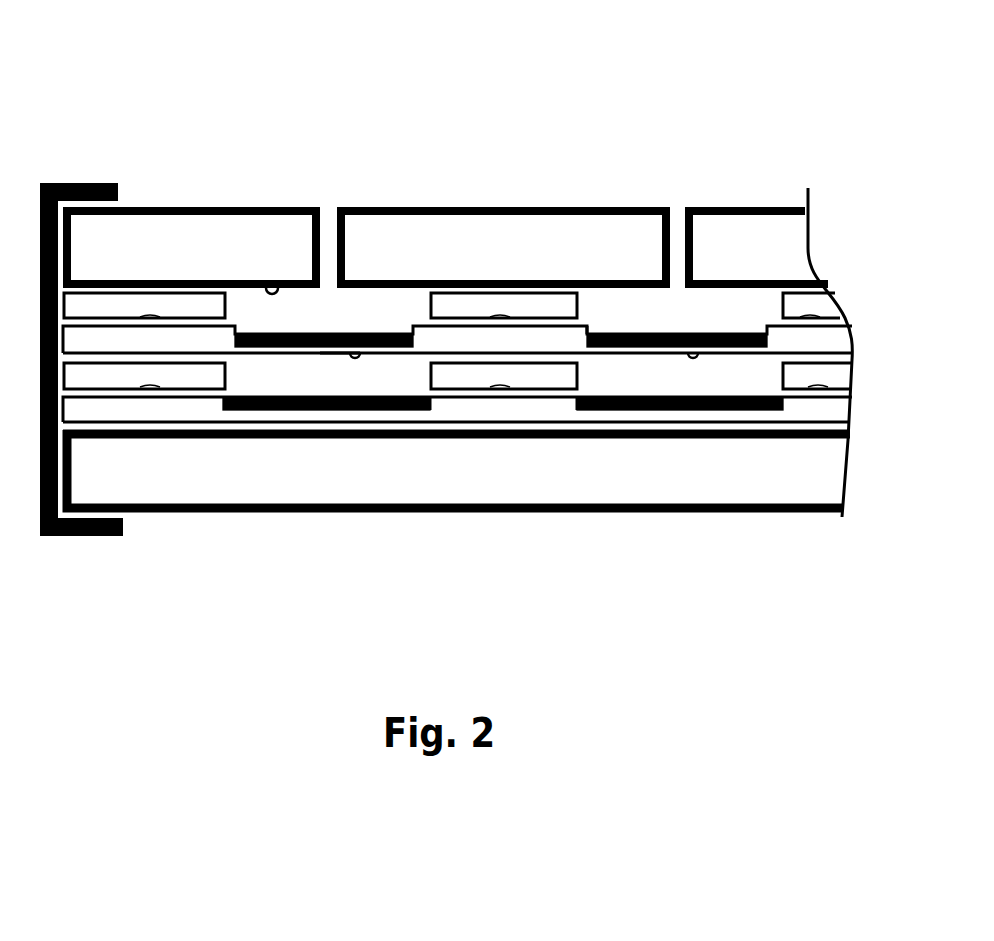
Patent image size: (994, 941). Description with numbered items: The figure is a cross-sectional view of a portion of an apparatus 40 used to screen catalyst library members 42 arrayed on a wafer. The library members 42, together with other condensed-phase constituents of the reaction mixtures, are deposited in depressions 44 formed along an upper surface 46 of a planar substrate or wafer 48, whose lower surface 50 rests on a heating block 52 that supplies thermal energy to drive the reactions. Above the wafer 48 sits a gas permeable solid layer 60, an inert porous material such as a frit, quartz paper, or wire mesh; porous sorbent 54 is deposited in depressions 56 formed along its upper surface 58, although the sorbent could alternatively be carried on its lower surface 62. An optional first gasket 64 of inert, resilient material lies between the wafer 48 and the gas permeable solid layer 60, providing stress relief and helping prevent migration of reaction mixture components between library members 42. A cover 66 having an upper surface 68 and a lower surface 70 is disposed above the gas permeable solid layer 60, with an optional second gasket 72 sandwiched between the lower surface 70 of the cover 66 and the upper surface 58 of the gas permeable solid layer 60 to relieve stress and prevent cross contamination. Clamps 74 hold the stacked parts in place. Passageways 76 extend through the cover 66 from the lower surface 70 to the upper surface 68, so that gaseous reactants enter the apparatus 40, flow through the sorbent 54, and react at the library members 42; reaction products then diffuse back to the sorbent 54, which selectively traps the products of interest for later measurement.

The apparatus 40 is at (708, 100).
The catalyst library members 42 is at (336, 398).
The depressions 44 is at (412, 412).
The upper surface 46 is at (578, 396).
The wafer 48 is at (827, 413).
The lower surface 50 is at (267, 439).
The heating block 52 is at (511, 484).
The porous sorbent 54 is at (273, 335).
The depressions 56 is at (368, 336).
The upper surface 58 is at (578, 326).
The gas permeable solid layer 60 is at (832, 339).
The lower surface 62 is at (333, 354).
The first gasket 64 is at (458, 376).
The cover 66 is at (497, 233).
The upper surface 68 is at (213, 208).
The lower surface 70 is at (283, 284).
The second gasket 72 is at (452, 305).
The clamps 74 is at (92, 183).
The passageways 76 is at (328, 218).